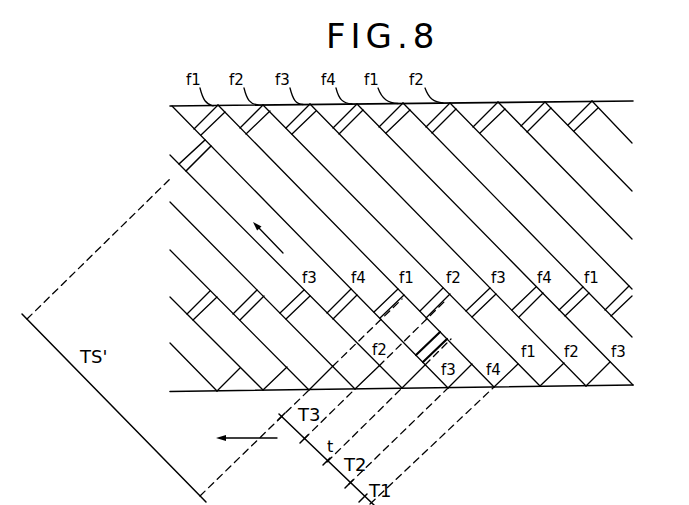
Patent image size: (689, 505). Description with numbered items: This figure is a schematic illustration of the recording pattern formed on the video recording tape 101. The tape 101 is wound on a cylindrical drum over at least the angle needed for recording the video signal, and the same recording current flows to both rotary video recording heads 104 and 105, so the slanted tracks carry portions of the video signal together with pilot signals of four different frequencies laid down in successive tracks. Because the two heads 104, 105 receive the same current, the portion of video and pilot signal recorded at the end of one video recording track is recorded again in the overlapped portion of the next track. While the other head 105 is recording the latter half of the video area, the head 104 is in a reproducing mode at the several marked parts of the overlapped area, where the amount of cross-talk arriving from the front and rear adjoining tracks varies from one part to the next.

The video recording tape 101 is at (567, 100).
The video recording head 104 is at (447, 334).
The video recording head 105 is at (208, 142).